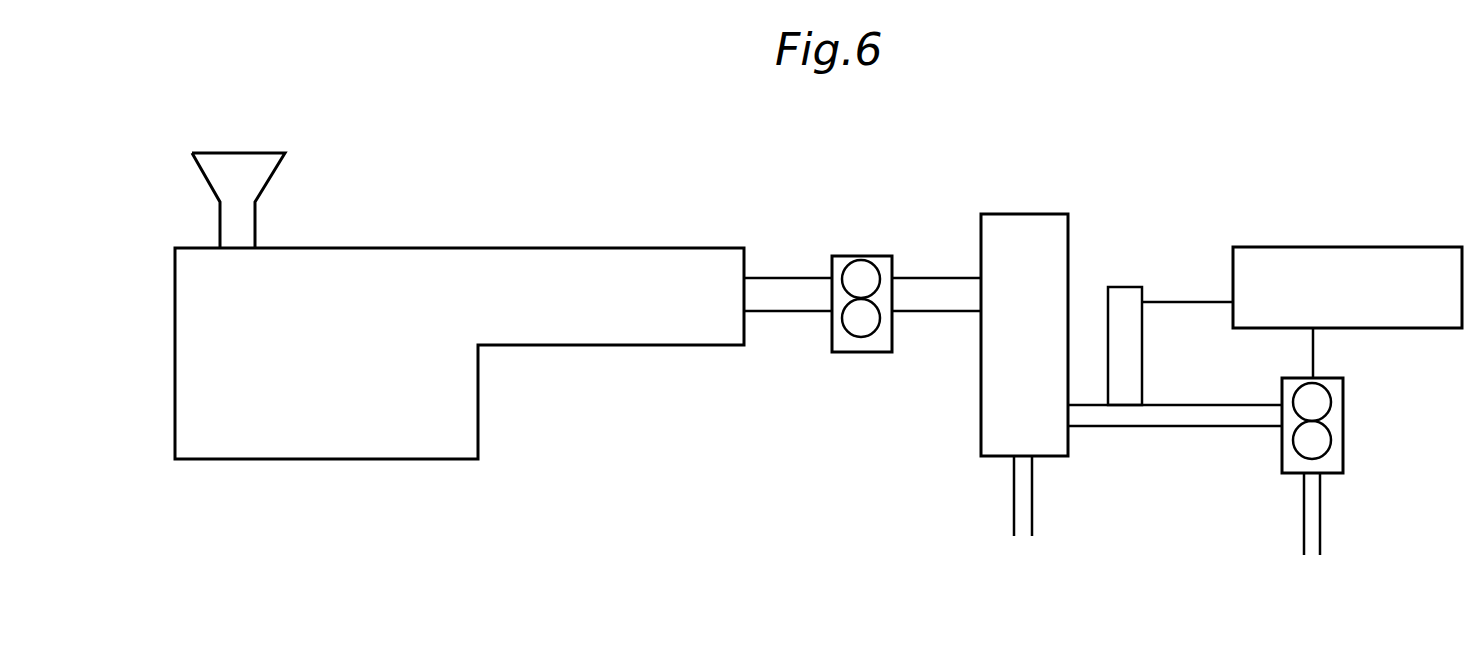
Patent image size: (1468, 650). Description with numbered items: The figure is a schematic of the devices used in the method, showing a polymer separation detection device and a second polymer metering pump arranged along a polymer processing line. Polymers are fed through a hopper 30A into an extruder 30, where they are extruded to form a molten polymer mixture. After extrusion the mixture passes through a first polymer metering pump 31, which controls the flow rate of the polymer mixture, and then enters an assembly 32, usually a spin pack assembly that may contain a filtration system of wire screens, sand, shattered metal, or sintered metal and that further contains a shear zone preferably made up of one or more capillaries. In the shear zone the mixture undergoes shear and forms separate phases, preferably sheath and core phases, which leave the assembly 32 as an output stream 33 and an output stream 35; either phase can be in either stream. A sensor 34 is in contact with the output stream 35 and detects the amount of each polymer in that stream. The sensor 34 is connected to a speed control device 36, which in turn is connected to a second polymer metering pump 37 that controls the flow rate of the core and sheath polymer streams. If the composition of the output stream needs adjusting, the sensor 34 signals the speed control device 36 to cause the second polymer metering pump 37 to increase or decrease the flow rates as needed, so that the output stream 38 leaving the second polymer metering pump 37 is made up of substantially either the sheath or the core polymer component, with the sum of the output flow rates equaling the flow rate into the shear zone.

The extruder 30 is at (632, 248).
The hopper 30A is at (268, 172).
The first polymer metering pump 31 is at (862, 256).
The assembly 32 is at (981, 214).
The output stream 33 is at (1012, 507).
The sensor 34 is at (1124, 287).
The output stream 35 is at (1236, 428).
The speed control device 36 is at (1347, 247).
The second polymer metering pump 37 is at (1343, 378).
The output stream 38 is at (1322, 522).